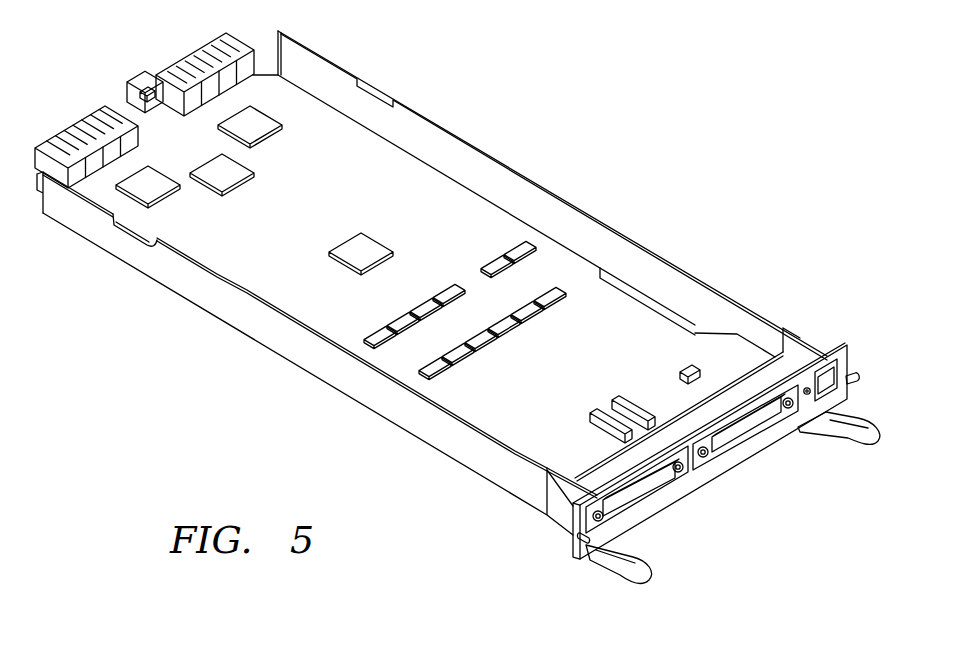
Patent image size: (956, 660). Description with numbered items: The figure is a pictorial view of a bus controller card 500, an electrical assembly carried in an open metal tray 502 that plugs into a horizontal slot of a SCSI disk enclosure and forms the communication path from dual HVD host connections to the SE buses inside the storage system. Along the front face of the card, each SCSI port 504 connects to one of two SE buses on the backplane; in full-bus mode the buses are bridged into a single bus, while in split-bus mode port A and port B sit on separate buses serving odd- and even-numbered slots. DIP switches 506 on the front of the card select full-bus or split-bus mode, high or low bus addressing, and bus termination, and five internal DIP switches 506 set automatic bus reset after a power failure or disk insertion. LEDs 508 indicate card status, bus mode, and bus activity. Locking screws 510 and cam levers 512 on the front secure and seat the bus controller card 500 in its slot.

The bus controller card 500 is at (543, 160).
The open metal tray 502 is at (133, 228).
The SCSI port 504 is at (642, 496).
The DIP switches 506 is at (700, 365).
The LEDs 508 is at (804, 428).
The locking screws 510 is at (582, 546).
The cam levers 512 is at (830, 432).